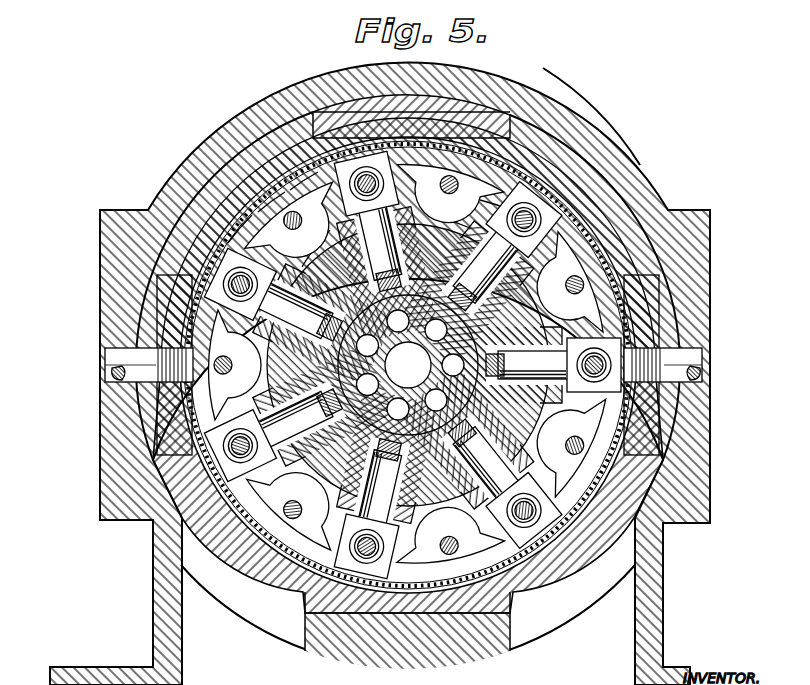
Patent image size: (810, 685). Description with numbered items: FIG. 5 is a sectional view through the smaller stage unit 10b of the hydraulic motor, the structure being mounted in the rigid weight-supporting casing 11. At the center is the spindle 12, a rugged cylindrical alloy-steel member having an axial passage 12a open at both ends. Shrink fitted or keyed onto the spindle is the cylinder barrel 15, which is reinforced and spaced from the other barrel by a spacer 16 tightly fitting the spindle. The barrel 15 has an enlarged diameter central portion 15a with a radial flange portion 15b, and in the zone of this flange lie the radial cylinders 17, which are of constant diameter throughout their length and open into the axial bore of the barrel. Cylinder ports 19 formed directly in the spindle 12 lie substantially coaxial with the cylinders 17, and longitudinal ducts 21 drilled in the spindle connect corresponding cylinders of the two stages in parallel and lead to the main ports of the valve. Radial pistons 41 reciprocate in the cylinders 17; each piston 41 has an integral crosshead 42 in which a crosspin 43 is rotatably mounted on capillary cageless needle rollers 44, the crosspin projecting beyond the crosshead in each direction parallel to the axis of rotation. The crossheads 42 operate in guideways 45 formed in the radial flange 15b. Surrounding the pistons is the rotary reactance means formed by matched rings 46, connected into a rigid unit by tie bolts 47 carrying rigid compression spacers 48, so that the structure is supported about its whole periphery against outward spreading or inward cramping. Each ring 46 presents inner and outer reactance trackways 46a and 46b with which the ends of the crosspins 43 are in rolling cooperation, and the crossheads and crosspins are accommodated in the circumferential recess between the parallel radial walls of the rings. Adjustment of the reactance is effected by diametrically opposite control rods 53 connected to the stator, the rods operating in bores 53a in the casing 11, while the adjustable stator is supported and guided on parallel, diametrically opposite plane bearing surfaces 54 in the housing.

The smaller stage unit 10b is at (595, 114).
The casing 11 is at (633, 164).
The spindle 12 is at (396, 530).
The axial passage 12a is at (408, 365).
The cylinder barrel 15 is at (580, 518).
The enlarged diameter central portion 15a is at (320, 268).
The radial flange portion 15b is at (496, 200).
The spacer 16 is at (458, 254).
The radial cylinders 17 is at (411, 365).
The cylinder ports 19 is at (402, 365).
The longitudinal ducts 21 is at (411, 365).
The radial pistons 41 is at (411, 365).
The crosshead 42 is at (553, 203).
The crosspin 43 is at (531, 210).
The capillary cageless needle rollers 44 is at (628, 290).
The guideways 45 is at (523, 266).
The matched rings 46 is at (245, 234).
The inner reactance trackway 46a is at (305, 195).
The outer reactance trackway 46b is at (270, 218).
The tie bolts 47 is at (227, 356).
The rigid compression spacers 48 is at (225, 378).
The control rods 53 is at (130, 354).
The bores 53a is at (112, 372).
The plane bearing surfaces 54 is at (467, 112).